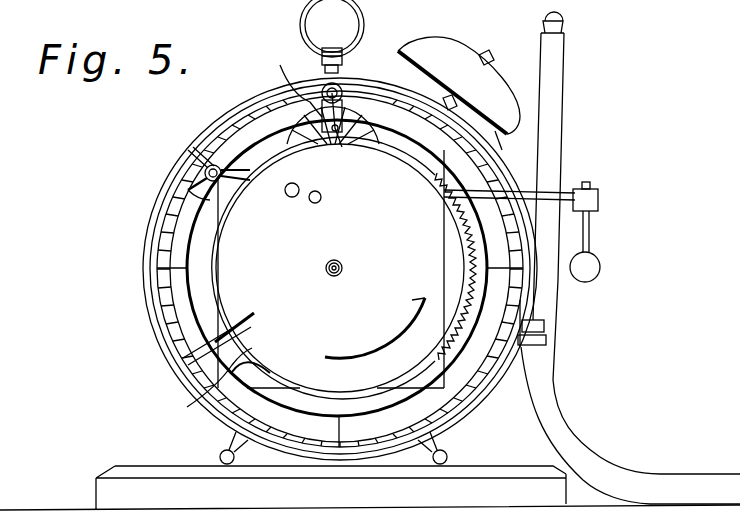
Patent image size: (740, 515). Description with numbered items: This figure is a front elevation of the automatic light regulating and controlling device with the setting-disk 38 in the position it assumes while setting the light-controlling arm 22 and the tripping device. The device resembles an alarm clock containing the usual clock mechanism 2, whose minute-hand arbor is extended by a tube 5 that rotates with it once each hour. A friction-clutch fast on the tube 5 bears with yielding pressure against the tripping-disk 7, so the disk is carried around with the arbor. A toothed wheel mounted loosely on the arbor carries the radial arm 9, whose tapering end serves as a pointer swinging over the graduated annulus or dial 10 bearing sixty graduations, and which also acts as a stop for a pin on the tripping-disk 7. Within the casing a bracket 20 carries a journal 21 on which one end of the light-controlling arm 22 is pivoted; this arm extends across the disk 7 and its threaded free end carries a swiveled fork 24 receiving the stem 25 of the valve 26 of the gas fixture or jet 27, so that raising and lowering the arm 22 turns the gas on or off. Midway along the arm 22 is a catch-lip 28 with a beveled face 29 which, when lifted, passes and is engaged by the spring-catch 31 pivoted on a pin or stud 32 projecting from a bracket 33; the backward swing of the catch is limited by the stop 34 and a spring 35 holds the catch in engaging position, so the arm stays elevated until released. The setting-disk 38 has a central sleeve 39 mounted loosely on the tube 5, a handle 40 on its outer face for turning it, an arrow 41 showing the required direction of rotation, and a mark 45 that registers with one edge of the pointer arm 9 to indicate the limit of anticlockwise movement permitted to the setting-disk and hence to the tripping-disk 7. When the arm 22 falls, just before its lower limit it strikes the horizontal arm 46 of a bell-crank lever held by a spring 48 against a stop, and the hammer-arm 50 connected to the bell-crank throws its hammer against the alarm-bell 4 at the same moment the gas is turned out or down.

The clock mechanism 2 is at (438, 378).
The alarm-bell 4 is at (440, 45).
The tube 5 is at (343, 265).
The tripping-disk 7 is at (152, 255).
The arm 9 is at (215, 345).
The graduated annulus or dial 10 is at (152, 297).
The bracket 20 is at (190, 163).
The journal 21 is at (185, 185).
The light-controlling arm 22 is at (556, 176).
The fork 24 is at (600, 206).
The stem 25 is at (591, 228).
The valve 26 is at (567, 283).
The gas fixture or jet 27 is at (553, 103).
The catch-lip 28 is at (348, 132).
The beveled face 29 is at (326, 136).
The spring-catch 31 is at (292, 80).
The pin or stud 32 is at (338, 88).
The bracket 33 is at (280, 95).
The projection or stop 34 is at (250, 118).
The spring 35 is at (343, 118).
The setting-disk 38 is at (187, 407).
The central sleeve 39 is at (336, 278).
The handle 40 is at (287, 194).
The arrow 41 is at (400, 328).
The mark 45 is at (246, 316).
The arm 46 is at (522, 347).
The spring 48 is at (522, 345).
The hammer-arm 50 is at (537, 300).